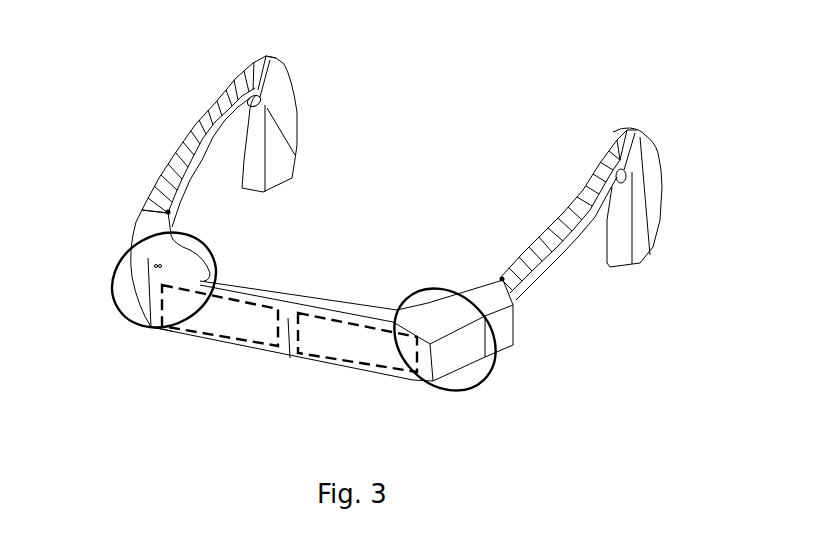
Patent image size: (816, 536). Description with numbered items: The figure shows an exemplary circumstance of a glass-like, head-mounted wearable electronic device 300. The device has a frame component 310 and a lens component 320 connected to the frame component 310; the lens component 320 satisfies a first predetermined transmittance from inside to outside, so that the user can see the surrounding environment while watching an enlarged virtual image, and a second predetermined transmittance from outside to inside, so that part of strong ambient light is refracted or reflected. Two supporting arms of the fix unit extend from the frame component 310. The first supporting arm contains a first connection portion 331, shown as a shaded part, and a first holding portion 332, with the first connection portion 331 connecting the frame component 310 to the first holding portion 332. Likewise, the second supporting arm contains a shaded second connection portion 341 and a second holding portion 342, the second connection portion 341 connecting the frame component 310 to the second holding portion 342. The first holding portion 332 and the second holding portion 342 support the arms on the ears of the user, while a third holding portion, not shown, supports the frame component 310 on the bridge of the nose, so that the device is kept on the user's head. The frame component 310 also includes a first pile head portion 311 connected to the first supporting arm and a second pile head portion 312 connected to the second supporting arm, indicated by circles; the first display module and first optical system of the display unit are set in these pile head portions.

The wearable electronic device 300 is at (588, 38).
The frame component 310 is at (233, 293).
The first pile head portion 311 is at (128, 290).
The second pile head portion 312 is at (483, 375).
The lens component 320 is at (330, 357).
The first connection portion 331 is at (200, 123).
The first holding portion 332 is at (283, 80).
The second connection portion 341 is at (578, 202).
The second holding portion 342 is at (662, 157).